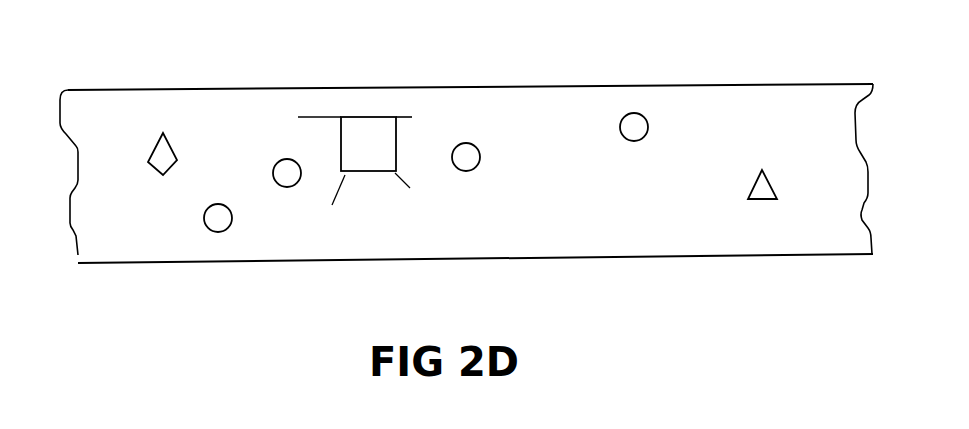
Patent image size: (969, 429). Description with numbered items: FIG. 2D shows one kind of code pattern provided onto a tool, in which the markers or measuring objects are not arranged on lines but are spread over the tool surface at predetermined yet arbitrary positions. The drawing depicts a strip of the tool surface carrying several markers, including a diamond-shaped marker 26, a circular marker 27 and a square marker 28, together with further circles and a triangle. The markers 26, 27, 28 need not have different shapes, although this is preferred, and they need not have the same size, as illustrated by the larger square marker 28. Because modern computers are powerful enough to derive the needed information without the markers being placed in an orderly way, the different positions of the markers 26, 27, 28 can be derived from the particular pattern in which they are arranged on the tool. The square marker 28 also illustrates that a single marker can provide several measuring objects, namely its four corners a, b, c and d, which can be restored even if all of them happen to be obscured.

The marker 26 is at (163, 133).
The marker 27 is at (217, 232).
The square marker 28 is at (368, 173).